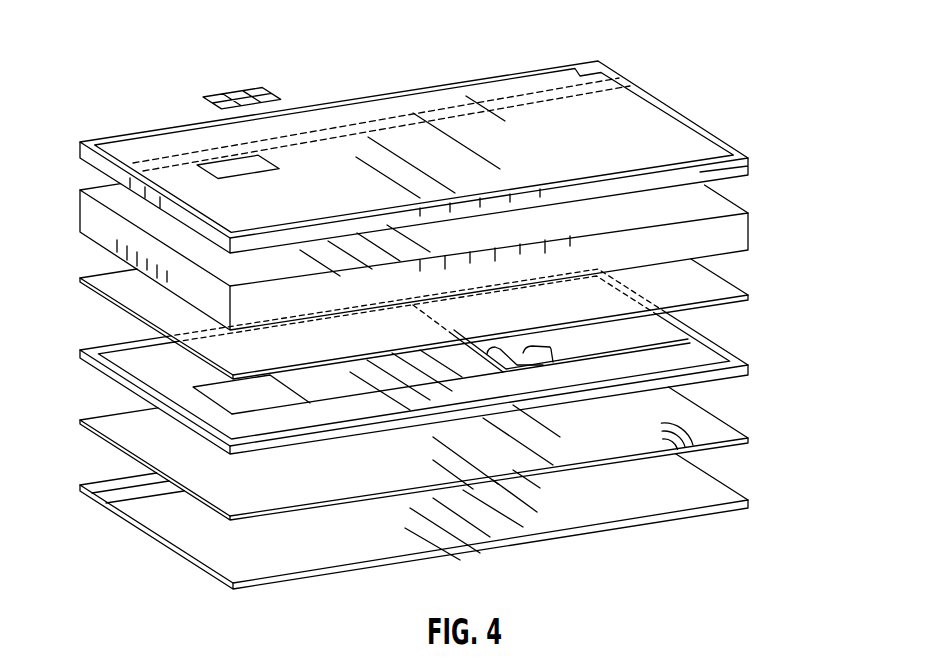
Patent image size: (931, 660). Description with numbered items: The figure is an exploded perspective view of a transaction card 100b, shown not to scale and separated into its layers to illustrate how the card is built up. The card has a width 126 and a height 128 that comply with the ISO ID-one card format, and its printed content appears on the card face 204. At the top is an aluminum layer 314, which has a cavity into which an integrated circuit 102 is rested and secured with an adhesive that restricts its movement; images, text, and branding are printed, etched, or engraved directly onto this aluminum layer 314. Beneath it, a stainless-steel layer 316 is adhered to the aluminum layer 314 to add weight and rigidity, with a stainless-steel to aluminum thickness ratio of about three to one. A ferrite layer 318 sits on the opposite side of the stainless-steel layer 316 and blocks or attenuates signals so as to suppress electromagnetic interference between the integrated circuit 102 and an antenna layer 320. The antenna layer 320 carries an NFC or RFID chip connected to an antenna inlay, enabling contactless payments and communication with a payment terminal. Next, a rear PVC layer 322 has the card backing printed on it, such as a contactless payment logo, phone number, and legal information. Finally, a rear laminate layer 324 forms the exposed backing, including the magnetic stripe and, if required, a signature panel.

The transaction card 100b is at (116, 68).
The integrated circuit 102 is at (200, 92).
The width 126 is at (603, 38).
The height 128 is at (847, 90).
The card face 204 is at (608, 79).
The aluminum layer 314 is at (733, 172).
The stainless-steel layer 316 is at (728, 236).
The ferrite layer 318 is at (723, 291).
The antenna layer 320 is at (707, 357).
The rear PVC layer 322 is at (710, 426).
The rear laminate layer 324 is at (718, 498).